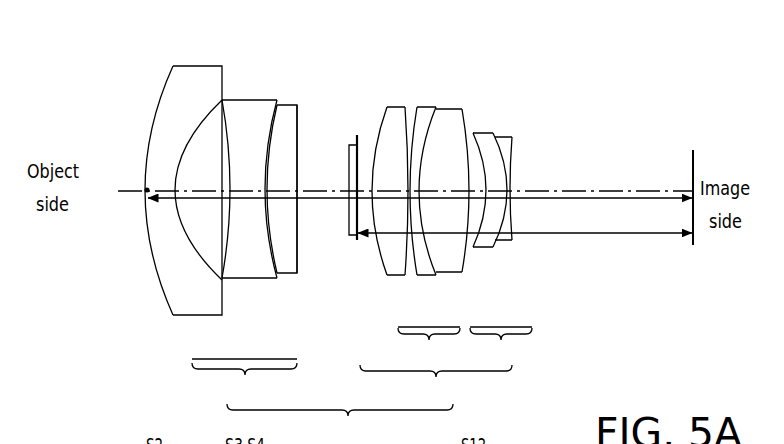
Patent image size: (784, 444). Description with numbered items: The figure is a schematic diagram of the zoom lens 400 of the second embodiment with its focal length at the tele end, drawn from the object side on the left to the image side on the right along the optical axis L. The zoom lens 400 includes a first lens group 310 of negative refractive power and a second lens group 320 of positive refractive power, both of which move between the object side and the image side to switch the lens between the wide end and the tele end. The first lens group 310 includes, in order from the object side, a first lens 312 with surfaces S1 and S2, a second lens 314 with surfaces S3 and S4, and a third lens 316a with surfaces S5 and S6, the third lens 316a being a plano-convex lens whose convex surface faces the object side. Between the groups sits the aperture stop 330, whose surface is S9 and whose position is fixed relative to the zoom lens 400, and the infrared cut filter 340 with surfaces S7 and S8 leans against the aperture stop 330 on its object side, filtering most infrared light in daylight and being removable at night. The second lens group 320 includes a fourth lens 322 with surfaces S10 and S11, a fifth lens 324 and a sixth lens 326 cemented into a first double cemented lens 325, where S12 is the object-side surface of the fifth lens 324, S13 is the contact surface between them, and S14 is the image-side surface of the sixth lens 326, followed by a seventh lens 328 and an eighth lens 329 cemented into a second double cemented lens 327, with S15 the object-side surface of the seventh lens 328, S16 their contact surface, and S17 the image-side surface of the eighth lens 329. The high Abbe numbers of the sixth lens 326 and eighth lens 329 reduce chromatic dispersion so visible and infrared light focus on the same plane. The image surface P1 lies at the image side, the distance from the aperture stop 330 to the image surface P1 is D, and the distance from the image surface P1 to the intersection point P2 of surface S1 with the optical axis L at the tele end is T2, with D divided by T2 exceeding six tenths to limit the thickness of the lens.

The zoom lens 400 is at (340, 424).
The first lens group 310 is at (244, 381).
The first lens 312 is at (150, 188).
The second lens 314 is at (249, 193).
The third lens 316a is at (287, 198).
The second lens group 320 is at (436, 383).
The fourth lens 322 is at (382, 204).
The fifth lens 324 is at (417, 175).
The first double cemented lens 325 is at (429, 345).
The sixth lens 326 is at (449, 191).
The second double cemented lens 327 is at (501, 345).
The seventh lens 328 is at (489, 179).
The eighth lens 329 is at (519, 204).
The aperture stop 330 is at (341, 215).
The infrared cut filter 340 is at (332, 183).
The surface of the first lens facing the object side S1 is at (152, 130).
The surface of the first lens S2 is at (220, 82).
The surface of the second lens S3 is at (229, 127).
The surface of the second lens S4 is at (263, 121).
The surface of the third lens S5 is at (279, 118).
The surface of the third lens S6 is at (295, 142).
The surface of the infrared cut filter S7 is at (345, 165).
The surface of the infrared cut filter S8 is at (352, 205).
The surface of the aperture stop S9 is at (352, 130).
The surface of the fourth lens S10 is at (380, 125).
The surface of the fourth lens S11 is at (402, 135).
The surface of the fifth lens facing the object side S12 is at (412, 117).
The contact surface between the fifth lens and the sixth lens S13 is at (432, 120).
The surface of the sixth lens facing the image side S14 is at (462, 135).
The surface of the seventh lens facing the object side S15 is at (474, 136).
The contact surface between the seventh lens and the eighth lens S16 is at (487, 149).
The surface of the eighth lens facing the image side S17 is at (513, 137).
The image surface P1 is at (695, 162).
The intersection point P2 is at (147, 189).
The optical axis L is at (392, 192).
The distance between the aperture stop and the image surface D is at (622, 233).
The distance between the image surface and the intersection point at the tele end T2 is at (195, 200).